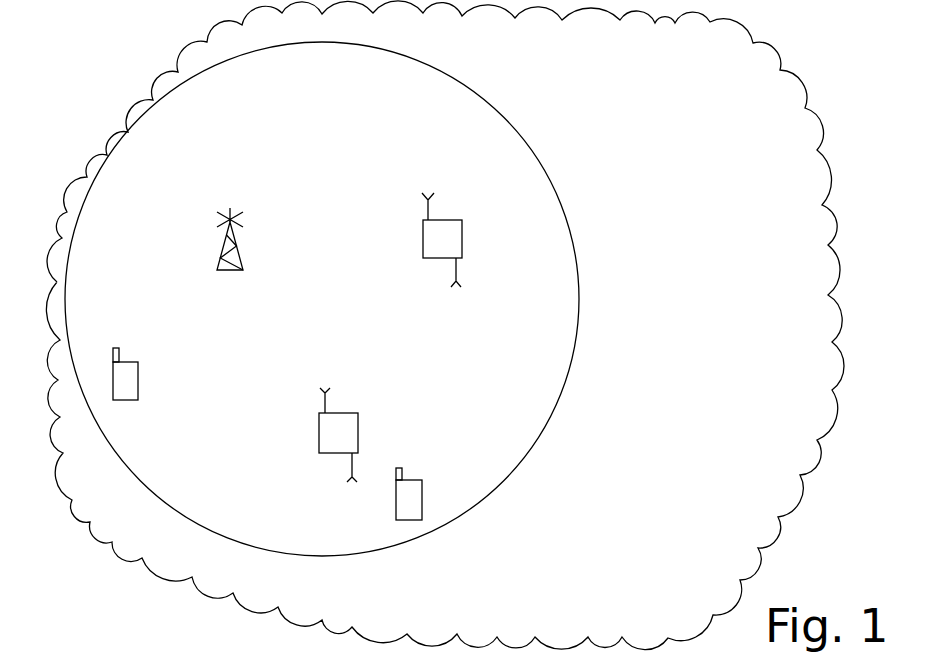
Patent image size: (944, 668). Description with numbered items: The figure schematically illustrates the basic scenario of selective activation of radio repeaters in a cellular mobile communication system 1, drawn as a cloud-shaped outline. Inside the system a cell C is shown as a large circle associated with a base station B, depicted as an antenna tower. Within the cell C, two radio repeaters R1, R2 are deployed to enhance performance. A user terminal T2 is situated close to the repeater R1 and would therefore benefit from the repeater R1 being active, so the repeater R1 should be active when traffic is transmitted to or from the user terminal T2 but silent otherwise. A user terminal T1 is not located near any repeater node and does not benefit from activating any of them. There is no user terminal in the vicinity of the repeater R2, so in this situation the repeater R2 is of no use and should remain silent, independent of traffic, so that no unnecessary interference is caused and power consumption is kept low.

The cellular mobile communication system 1 is at (127, 543).
The cell C is at (152, 130).
The base station B is at (230, 219).
The radio repeater R1 is at (322, 438).
The radio repeater R2 is at (448, 239).
The user terminal T1 is at (126, 388).
The user terminal T2 is at (418, 493).